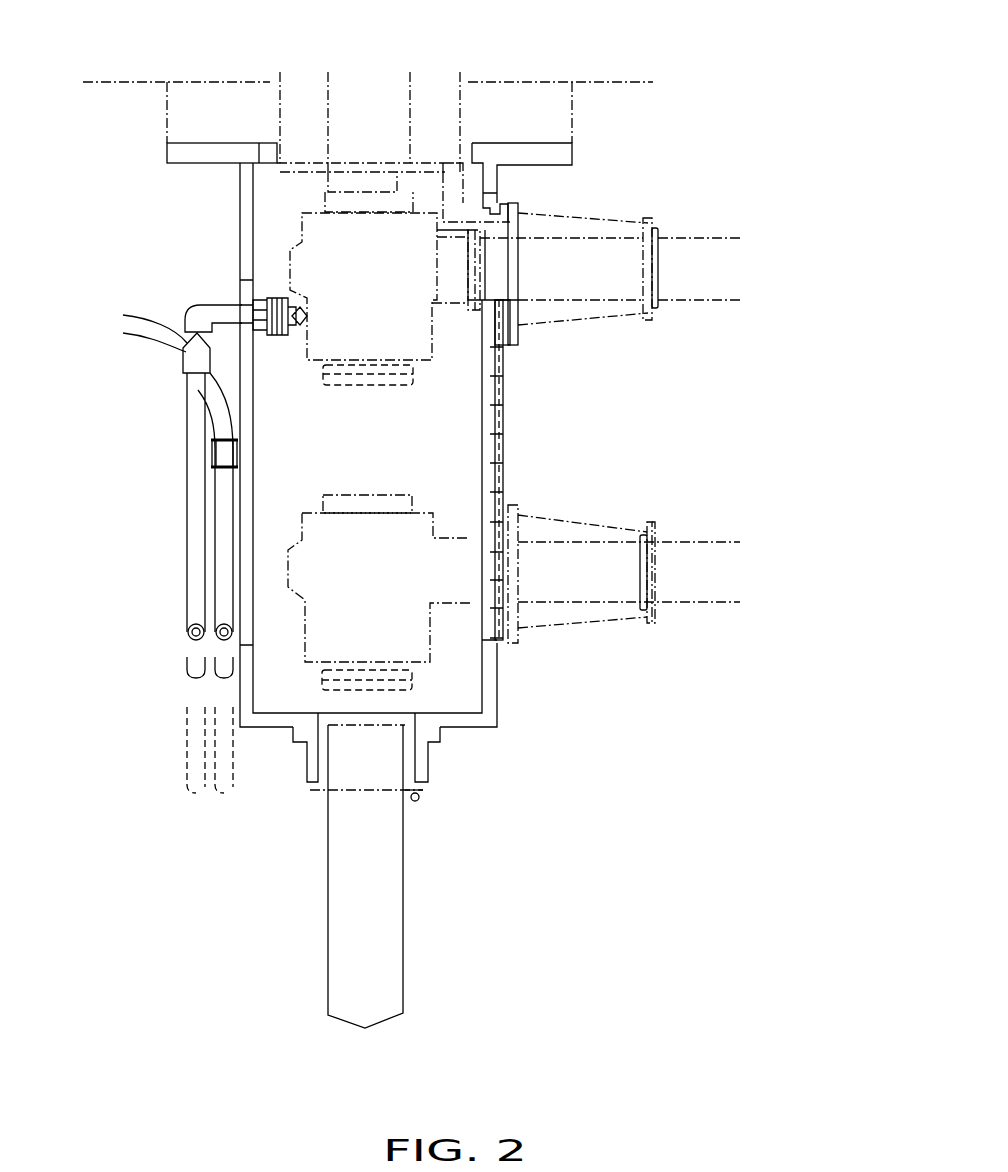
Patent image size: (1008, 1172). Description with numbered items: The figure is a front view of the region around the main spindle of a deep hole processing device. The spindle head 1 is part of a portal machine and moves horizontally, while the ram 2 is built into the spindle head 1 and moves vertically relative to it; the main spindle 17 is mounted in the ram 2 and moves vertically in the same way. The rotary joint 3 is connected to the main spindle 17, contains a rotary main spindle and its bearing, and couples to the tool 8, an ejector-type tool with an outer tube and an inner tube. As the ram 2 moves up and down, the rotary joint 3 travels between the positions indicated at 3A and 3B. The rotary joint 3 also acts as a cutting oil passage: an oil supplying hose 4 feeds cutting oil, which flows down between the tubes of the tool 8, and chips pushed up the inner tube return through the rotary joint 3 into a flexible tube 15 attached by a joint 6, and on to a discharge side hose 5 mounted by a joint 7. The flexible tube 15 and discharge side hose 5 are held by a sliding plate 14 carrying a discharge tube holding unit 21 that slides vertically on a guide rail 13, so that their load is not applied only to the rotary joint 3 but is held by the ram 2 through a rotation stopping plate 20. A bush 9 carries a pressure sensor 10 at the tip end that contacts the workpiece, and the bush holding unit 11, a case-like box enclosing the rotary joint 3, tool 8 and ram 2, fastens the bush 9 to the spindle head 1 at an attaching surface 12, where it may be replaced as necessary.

The spindle head 1 is at (170, 122).
The ram 2 is at (433, 82).
The rotary joint 3 is at (379, 451).
The rotary joint upper position 3A is at (317, 350).
The rotary joint lower position 3B is at (318, 523).
The oil supplying hose 4 is at (190, 485).
The discharge side hose 5 is at (680, 297).
The joint 6 is at (478, 264).
The joint 7 is at (656, 234).
The tool 8 is at (395, 960).
The bush 9 is at (322, 757).
The pressure sensor 10 is at (418, 801).
The bush holding unit 11 is at (249, 160).
The attaching surface 12 is at (197, 150).
The guide rail 13 is at (503, 492).
The sliding plate 14 is at (520, 310).
The flexible tube 15 is at (622, 257).
The main spindle 17 is at (365, 84).
The rotation stopping plate 20 is at (443, 167).
The discharge tube holding unit 21 is at (512, 335).